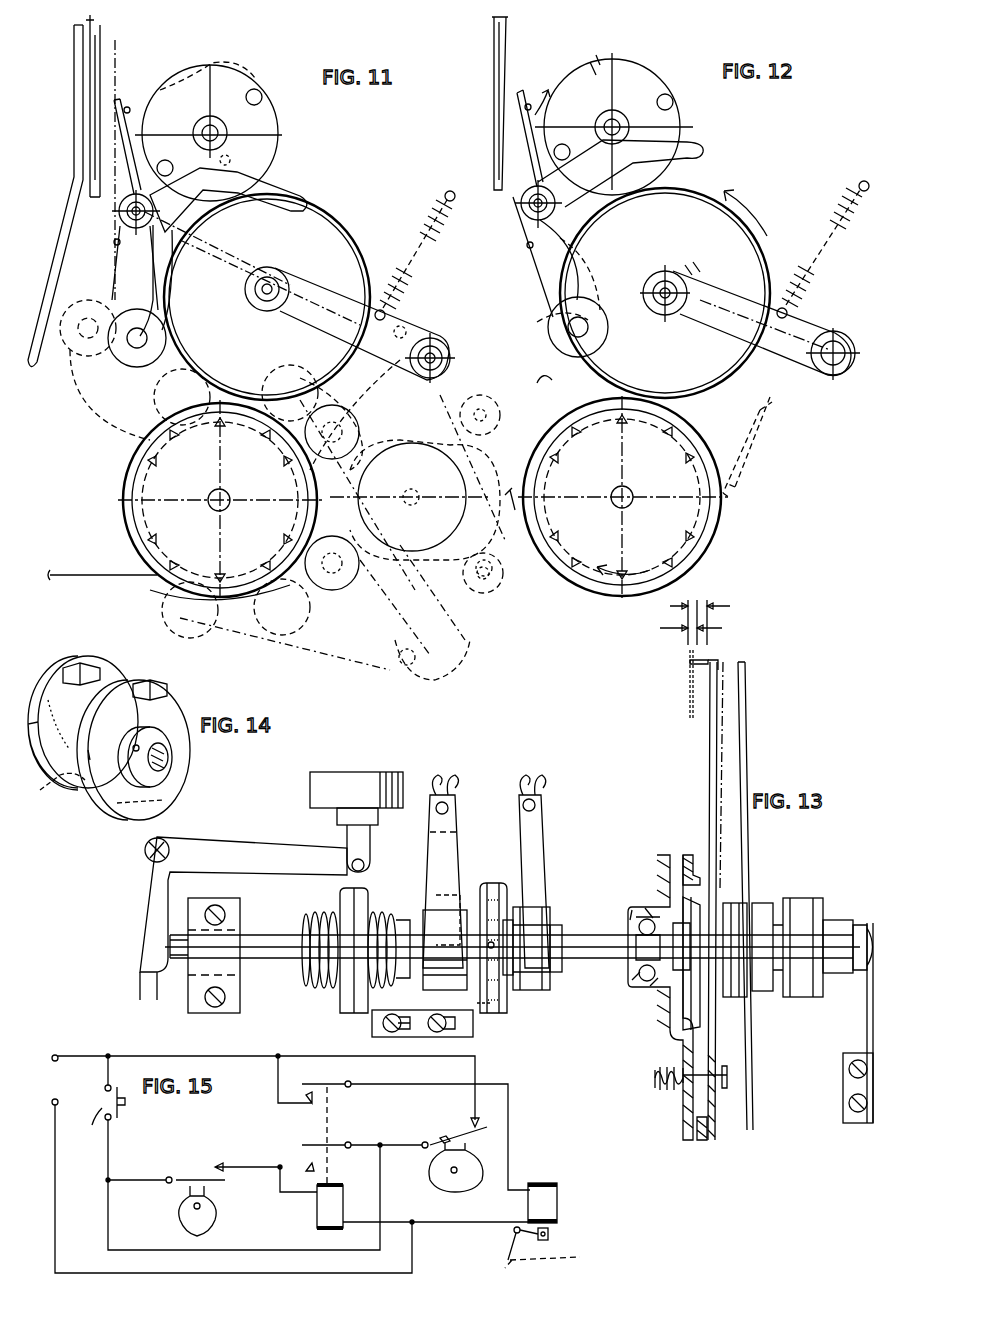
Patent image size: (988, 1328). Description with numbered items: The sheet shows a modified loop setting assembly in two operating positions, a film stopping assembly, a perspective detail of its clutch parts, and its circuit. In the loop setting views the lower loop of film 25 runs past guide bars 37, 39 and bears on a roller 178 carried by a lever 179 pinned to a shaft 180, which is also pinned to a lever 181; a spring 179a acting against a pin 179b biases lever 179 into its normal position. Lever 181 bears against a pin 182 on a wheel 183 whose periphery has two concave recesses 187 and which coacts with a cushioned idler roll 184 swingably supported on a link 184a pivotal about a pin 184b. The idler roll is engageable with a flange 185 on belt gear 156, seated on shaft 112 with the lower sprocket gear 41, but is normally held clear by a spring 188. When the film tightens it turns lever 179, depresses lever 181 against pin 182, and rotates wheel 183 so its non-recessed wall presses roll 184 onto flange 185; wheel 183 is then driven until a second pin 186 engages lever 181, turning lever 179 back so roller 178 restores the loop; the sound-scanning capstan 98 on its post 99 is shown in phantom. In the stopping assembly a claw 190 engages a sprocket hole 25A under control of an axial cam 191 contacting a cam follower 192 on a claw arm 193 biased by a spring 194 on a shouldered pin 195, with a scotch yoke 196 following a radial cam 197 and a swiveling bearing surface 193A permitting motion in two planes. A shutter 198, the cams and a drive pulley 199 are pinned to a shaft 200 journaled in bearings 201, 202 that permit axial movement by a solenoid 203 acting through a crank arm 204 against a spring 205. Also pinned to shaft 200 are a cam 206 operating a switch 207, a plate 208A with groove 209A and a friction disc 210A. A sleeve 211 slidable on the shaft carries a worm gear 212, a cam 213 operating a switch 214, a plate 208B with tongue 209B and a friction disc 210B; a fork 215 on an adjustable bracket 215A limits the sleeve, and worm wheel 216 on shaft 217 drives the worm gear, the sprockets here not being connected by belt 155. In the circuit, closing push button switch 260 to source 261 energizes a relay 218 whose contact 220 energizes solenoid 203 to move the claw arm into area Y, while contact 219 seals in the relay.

In FIG. 11, the film 25 is at (80, 258).
In FIG. 12, the film 25 is at (537, 383).
In FIG. 13, the film 25 is at (690, 690).
In FIG. 13, the sprocket hole 25A is at (690, 662).
In FIG. 11, the guide bar 37 is at (80, 100).
In FIG. 11, the guide bar 39 is at (86, 48).
In FIG. 11, the lower sprocket gear 41 is at (122, 493).
In FIG. 12, the lower sprocket gear 41 is at (703, 551).
In FIG. 11, the sound-scanning capstan 98 is at (352, 462).
In FIG. 11, the post 99 is at (432, 486).
In FIG. 11, the shaft 112 is at (212, 512).
In FIG. 12, the shaft 112 is at (633, 478).
In FIG. 12, the belt 155 is at (757, 457).
In FIG. 11, the belt gear 156 is at (128, 583).
In FIG. 12, the belt gear 156 is at (687, 578).
In FIG. 11, the roller 178 is at (190, 340).
In FIG. 12, the roller 178 is at (612, 340).
In FIG. 11, the lever 179 is at (168, 274).
In FIG. 12, the lever 179 is at (571, 230).
In FIG. 11, the spring 179a is at (128, 133).
In FIG. 12, the spring 179a is at (523, 125).
In FIG. 11, the pin 179b is at (133, 100).
In FIG. 12, the pin 179b is at (528, 100).
In FIG. 11, the shaft 180 is at (118, 208).
In FIG. 12, the shaft 180 is at (527, 200).
In FIG. 11, the lever 181 is at (284, 194).
In FIG. 12, the lever 181 is at (687, 155).
In FIG. 11, the pin 182 is at (186, 148).
In FIG. 12, the pin 182 is at (567, 140).
In FIG. 11, the wheel 183 is at (278, 118).
In FIG. 12, the wheel 183 is at (643, 78).
In FIG. 11, the idler roll 184 is at (370, 216).
In FIG. 12, the idler roll 184 is at (700, 246).
In FIG. 11, the link 184a is at (347, 264).
In FIG. 12, the link 184a is at (778, 360).
In FIG. 12, the pin 184b is at (821, 372).
In FIG. 11, the flange 185 is at (122, 525).
In FIG. 12, the flange 185 is at (722, 425).
In FIG. 11, the second pin 186 is at (258, 82).
In FIG. 12, the second pin 186 is at (669, 97).
In FIG. 11, the concave recesses 187 is at (188, 68).
In FIG. 12, the concave recesses 187 is at (596, 55).
In FIG. 11, the spring 188 is at (424, 268).
In FIG. 12, the spring 188 is at (818, 260).
In FIG. 13, the claw 190 is at (708, 656).
In FIG. 13, the axial cam 191 is at (680, 912).
In FIG. 13, the cam follower 192 is at (708, 857).
In FIG. 13, the claw arm 193 is at (708, 742).
In FIG. 13, the bearing surface 193A is at (697, 1130).
In FIG. 13, the spring 194 is at (677, 1096).
In FIG. 13, the shouldered pin 195 is at (723, 1096).
In FIG. 13, the scotch yoke 196 is at (720, 900).
In FIG. 13, the radial cam 197 is at (730, 997).
In FIG. 13, the shutter 198 is at (745, 718).
In FIG. 13, the drive pulley 199 is at (800, 907).
In FIG. 13, the shaft 200 is at (585, 960).
In FIG. 15, the shaft 200 is at (505, 1266).
In FIG. 13, the bearing 201 is at (643, 993).
In FIG. 13, the bearing 202 is at (193, 990).
In FIG. 13, the solenoid 203 is at (347, 776).
In FIG. 15, the solenoid 203 is at (528, 1205).
In FIG. 13, the crank arm 204 is at (150, 932).
In FIG. 15, the crank arm 204 is at (510, 1240).
In FIG. 13, the spring 205 is at (867, 1042).
In FIG. 13, the cam 206 is at (553, 918).
In FIG. 15, the cam 206 is at (437, 1175).
In FIG. 13, the electrical switch 207 is at (540, 846).
In FIG. 15, the electrical switch 207 is at (455, 1132).
In FIG. 13, the plate 208A is at (508, 890).
In FIG. 14, the plate 208A is at (190, 750).
In FIG. 13, the plate 208B is at (481, 888).
In FIG. 14, the plate 208B is at (113, 664).
In FIG. 14, the groove 209A is at (135, 693).
In FIG. 14, the tongue 209B is at (97, 668).
In FIG. 13, the friction disc 210A is at (497, 1003).
In FIG. 14, the friction disc 210A is at (200, 783).
In FIG. 13, the friction disc 210B is at (488, 1005).
In FIG. 14, the friction disc 210B is at (66, 770).
In FIG. 13, the sleeve 211 is at (403, 917).
In FIG. 13, the worm gear 212 is at (330, 912).
In FIG. 13, the cam 213 is at (420, 905).
In FIG. 15, the cam 213 is at (180, 1212).
In FIG. 13, the electrical switch 214 is at (452, 822).
In FIG. 15, the electrical switch 214 is at (204, 1172).
In FIG. 13, the fork 215 is at (477, 994).
In FIG. 13, the bracket 215A is at (383, 1034).
In FIG. 13, the worm wheel 216 is at (303, 933).
In FIG. 13, the shaft 217 is at (347, 1000).
In FIG. 15, the relay 218 is at (317, 1220).
In FIG. 15, the contact 219 is at (300, 1150).
In FIG. 15, the contact 220 is at (300, 1095).
In FIG. 15, the push button switch 260 is at (233, 1164).
In FIG. 15, the source 261 is at (48, 1065).
In FIG. 12, the area Y is at (696, 619).